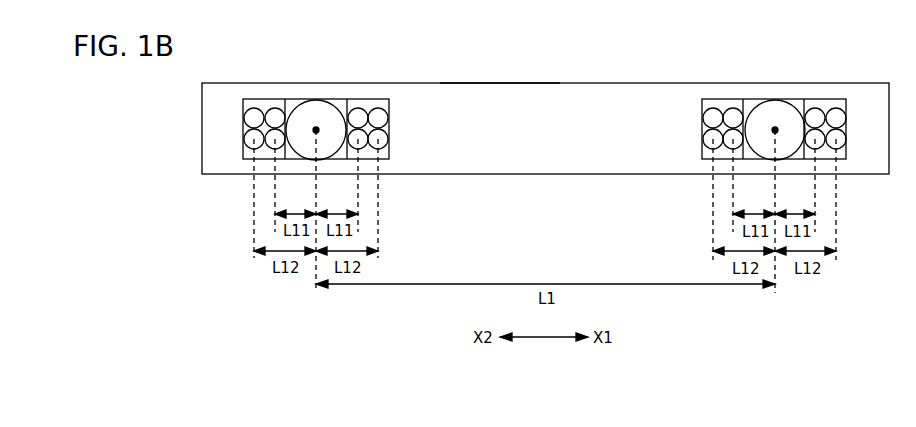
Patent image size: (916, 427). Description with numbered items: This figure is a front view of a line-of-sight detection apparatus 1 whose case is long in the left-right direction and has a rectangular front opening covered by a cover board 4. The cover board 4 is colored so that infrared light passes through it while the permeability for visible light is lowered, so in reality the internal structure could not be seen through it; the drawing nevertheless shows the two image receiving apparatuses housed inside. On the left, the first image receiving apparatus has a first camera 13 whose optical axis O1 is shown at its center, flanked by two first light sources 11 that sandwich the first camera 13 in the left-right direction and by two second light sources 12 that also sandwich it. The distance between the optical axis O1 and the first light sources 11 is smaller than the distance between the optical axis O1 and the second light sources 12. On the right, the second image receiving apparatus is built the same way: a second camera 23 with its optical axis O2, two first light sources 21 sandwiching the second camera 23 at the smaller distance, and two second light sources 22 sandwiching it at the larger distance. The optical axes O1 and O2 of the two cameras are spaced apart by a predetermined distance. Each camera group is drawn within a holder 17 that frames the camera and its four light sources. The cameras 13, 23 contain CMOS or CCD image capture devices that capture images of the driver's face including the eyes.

The line-of-sight detection apparatus 1 is at (616, 70).
The cover board 4 is at (498, 95).
The first light sources 11 is at (275, 137).
The second light sources 12 is at (254, 137).
The first camera 13 is at (303, 108).
The bearing holder 17 is at (345, 98).
The first light sources 21 is at (733, 137).
The second light sources 22 is at (713, 137).
The second camera 23 is at (762, 110).
The optical axis of the first camera O1 is at (316, 129).
The optical axis of the second camera O2 is at (775, 129).